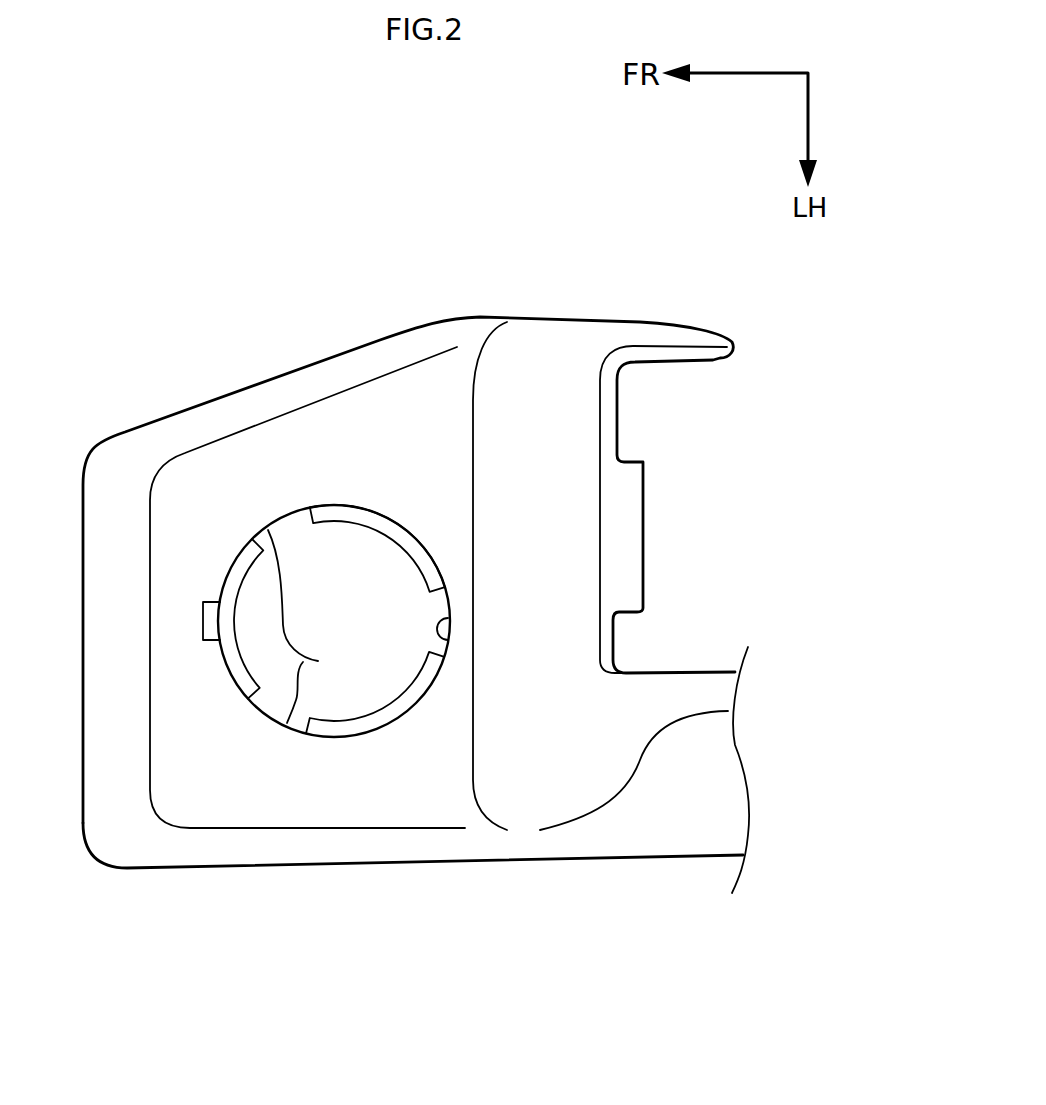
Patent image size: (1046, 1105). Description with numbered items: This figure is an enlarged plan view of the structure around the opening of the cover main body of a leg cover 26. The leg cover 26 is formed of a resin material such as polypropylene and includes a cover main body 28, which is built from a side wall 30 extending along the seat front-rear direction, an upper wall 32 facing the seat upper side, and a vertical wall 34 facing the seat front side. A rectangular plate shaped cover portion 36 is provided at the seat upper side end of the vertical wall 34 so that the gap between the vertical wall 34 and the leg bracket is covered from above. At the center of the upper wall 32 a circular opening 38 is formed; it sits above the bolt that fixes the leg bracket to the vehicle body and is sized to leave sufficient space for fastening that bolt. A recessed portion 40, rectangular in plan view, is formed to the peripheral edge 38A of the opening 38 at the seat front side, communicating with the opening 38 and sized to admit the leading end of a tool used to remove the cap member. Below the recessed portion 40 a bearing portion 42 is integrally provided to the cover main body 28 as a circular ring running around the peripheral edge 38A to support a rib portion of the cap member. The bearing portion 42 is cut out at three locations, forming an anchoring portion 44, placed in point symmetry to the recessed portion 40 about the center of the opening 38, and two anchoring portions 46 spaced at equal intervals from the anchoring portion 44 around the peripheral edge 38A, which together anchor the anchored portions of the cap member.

The leg cover 26 is at (608, 276).
The cover main body 28 is at (682, 856).
The side wall 30 is at (540, 862).
The upper wall 32 is at (289, 760).
The vertical wall 34 is at (542, 353).
The cover portion 36 is at (632, 542).
The opening 38 is at (370, 632).
The peripheral edge 38A is at (340, 487).
The recessed portion 40 is at (206, 622).
The bearing portion 42 is at (235, 573).
The anchoring portion 44 is at (450, 616).
The anchoring portion 46 is at (310, 626).